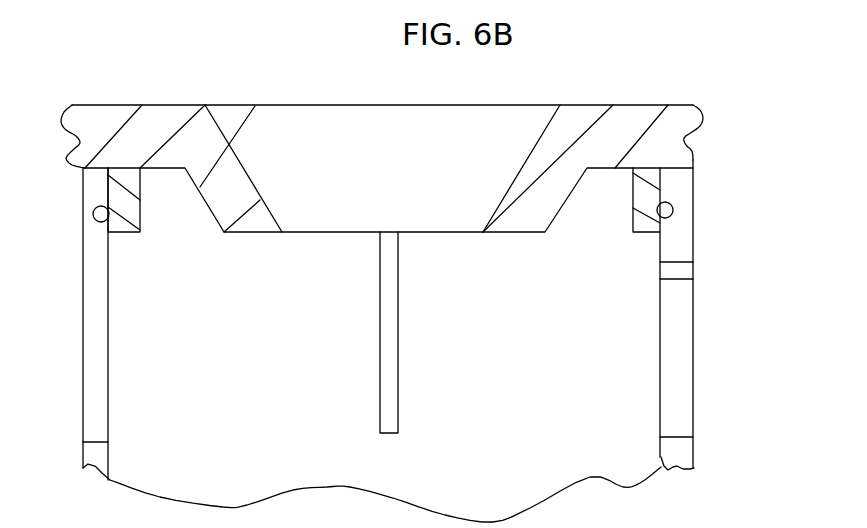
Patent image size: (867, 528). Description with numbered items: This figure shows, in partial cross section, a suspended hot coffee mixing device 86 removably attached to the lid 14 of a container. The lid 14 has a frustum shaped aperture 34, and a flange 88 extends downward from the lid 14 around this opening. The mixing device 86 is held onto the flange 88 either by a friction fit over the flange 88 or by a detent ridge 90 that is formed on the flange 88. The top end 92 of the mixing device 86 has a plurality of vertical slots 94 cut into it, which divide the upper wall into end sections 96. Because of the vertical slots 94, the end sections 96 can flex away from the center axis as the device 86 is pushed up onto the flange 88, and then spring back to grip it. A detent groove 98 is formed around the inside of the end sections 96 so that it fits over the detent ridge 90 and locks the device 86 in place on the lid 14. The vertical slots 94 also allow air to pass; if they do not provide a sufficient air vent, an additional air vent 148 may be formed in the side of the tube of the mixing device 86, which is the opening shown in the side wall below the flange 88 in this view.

The lid 14 is at (112, 106).
The frustum shaped aperture 34 is at (255, 106).
The hot coffee mixing device 86 is at (733, 398).
The flange 88 is at (633, 223).
The detent ridge 90 is at (667, 202).
The top end 92 is at (385, 480).
The vertical slots 94 is at (398, 407).
The end sections 96 is at (384, 324).
The detent groove 98 is at (95, 222).
The additional air vent 148 is at (660, 273).